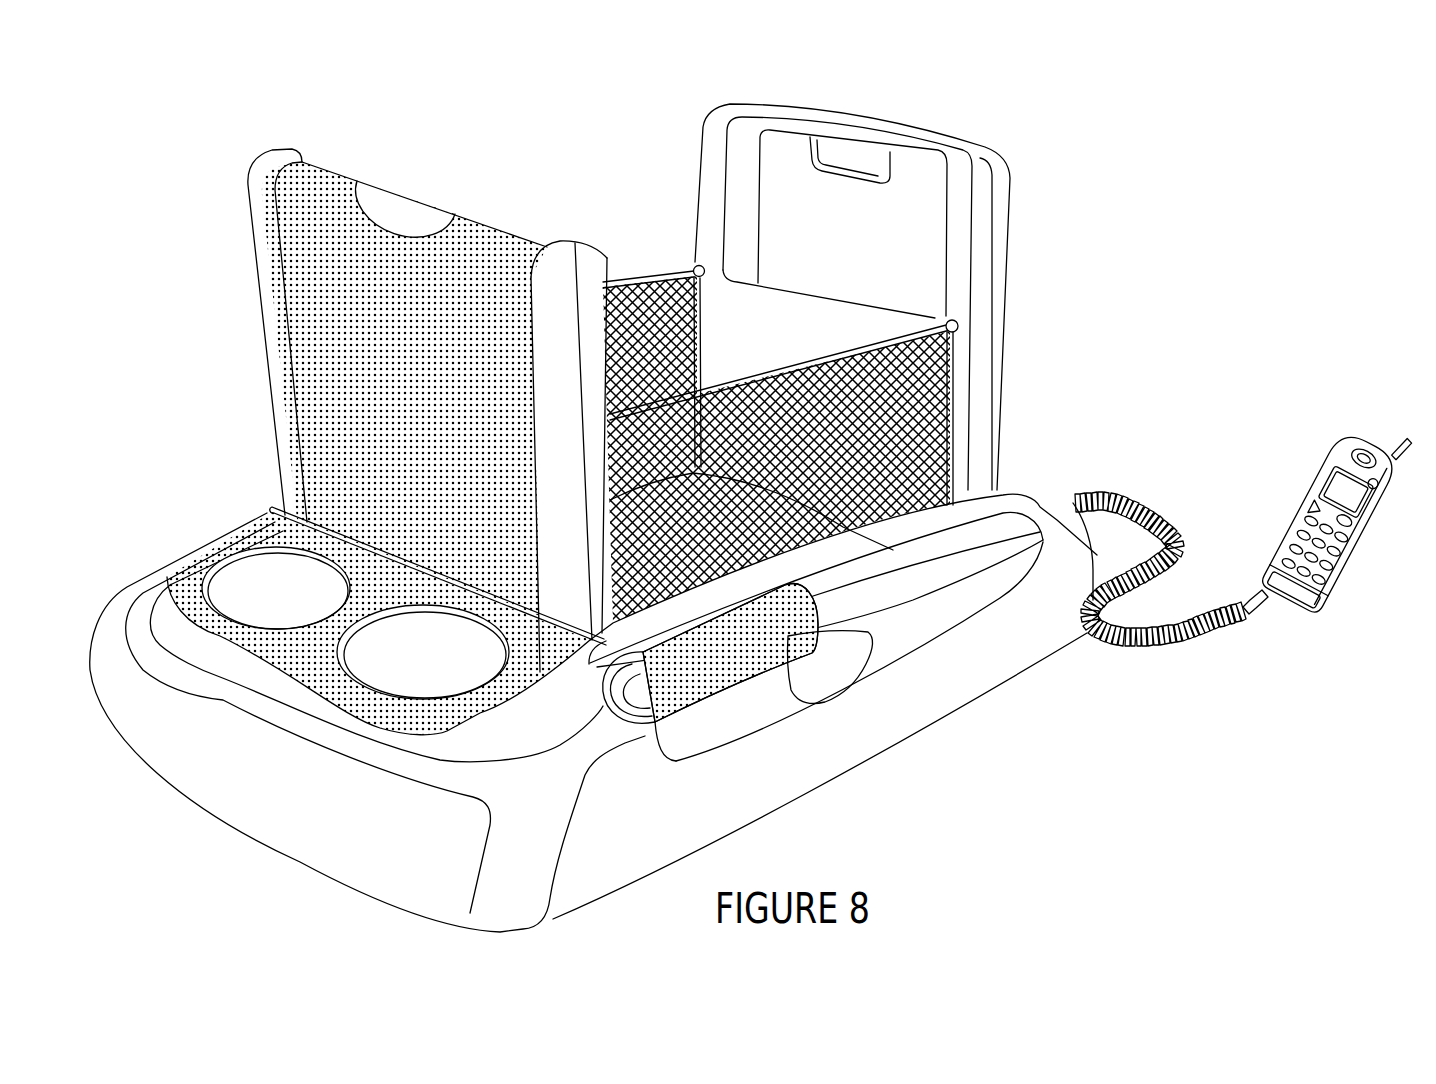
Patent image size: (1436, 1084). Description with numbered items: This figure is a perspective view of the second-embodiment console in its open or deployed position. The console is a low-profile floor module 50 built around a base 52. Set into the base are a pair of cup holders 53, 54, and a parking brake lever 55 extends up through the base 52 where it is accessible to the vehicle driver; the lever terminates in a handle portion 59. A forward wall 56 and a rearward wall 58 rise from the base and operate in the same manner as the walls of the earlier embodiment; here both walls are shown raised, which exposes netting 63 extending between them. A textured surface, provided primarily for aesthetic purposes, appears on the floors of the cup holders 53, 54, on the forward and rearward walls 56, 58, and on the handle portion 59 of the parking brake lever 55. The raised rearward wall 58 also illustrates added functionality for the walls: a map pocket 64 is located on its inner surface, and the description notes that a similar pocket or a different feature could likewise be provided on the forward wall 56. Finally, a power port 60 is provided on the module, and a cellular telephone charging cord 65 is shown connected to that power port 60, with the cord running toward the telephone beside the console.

The low-profile floor module 50 is at (123, 602).
The base 52 is at (228, 757).
The cup holder 53 is at (292, 605).
The cup holder 54 is at (440, 675).
The parking brake lever 55 is at (952, 630).
The forward wall 56 is at (299, 177).
The rearward wall 58 is at (780, 103).
The handle portion 59 is at (590, 668).
The power port 60 is at (1063, 502).
The netting 63 is at (659, 270).
The map pocket 64 is at (770, 343).
The cellular telephone charging cord 65 is at (1178, 537).